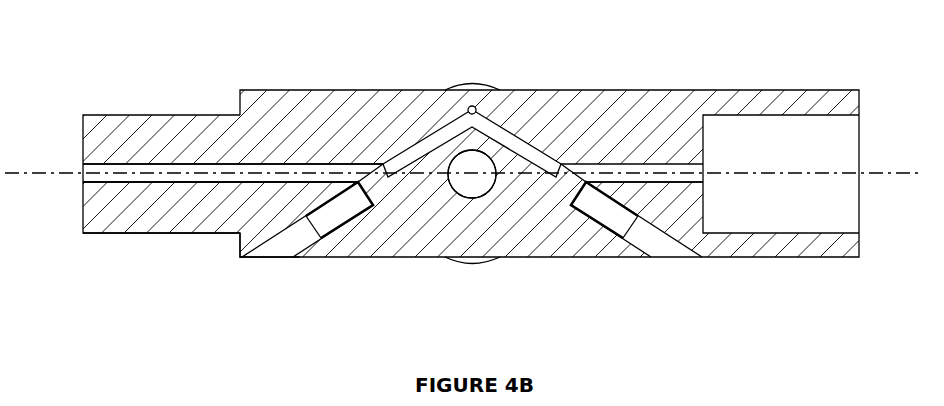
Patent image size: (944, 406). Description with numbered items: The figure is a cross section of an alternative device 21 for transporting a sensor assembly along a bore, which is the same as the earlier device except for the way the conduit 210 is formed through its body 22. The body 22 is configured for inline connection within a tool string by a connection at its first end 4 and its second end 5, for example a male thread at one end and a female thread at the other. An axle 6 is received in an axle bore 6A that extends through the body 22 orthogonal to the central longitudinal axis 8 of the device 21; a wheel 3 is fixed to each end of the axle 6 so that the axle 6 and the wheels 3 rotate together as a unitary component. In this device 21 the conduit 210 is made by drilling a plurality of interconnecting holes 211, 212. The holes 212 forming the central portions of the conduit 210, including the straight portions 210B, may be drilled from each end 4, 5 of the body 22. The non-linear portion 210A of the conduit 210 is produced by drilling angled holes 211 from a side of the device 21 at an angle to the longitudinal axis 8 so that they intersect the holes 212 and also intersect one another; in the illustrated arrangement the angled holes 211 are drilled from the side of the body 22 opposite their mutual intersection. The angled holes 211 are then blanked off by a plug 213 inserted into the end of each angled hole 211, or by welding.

The wheel 3 is at (487, 90).
The first end 4 is at (115, 133).
The second end 5 is at (808, 190).
The axle 6 is at (470, 183).
The axle bore 6A is at (463, 198).
The central longitudinal axis 8 is at (897, 172).
The device 21 is at (610, 74).
The body 22 is at (282, 218).
The conduit 210 is at (181, 178).
The non-linear portion of the conduit 210A is at (455, 128).
The straight channel portion 210B is at (322, 176).
The angled hole 211 is at (288, 241).
The hole forming central portion of the conduit 212 is at (205, 174).
The plug 213 is at (358, 202).